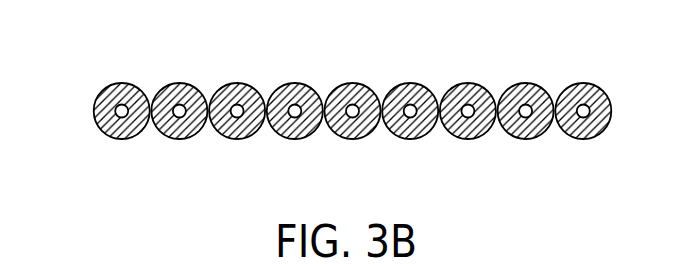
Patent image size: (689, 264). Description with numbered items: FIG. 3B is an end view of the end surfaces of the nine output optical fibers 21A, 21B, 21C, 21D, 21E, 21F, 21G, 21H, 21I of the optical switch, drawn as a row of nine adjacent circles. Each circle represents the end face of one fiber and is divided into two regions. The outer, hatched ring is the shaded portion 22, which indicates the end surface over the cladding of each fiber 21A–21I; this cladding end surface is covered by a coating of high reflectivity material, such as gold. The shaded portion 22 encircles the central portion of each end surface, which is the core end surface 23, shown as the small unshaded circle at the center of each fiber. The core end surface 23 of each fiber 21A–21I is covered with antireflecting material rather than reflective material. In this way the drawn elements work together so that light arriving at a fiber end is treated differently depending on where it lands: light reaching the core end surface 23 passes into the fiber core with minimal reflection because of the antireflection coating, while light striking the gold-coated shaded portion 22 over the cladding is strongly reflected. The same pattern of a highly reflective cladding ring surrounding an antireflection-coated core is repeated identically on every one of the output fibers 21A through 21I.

The output optical fiber 21A is at (123, 83).
The output optical fiber 21B is at (175, 140).
The output optical fiber 21C is at (238, 83).
The output optical fiber 21D is at (295, 140).
The output optical fiber 21E is at (349, 83).
The output optical fiber 21F is at (410, 140).
The output optical fiber 21G is at (464, 83).
The output optical fiber 21H is at (525, 140).
The output optical fiber 21I is at (583, 83).
The shaded portion 22 is at (131, 141).
The core end surface 23 is at (114, 110).